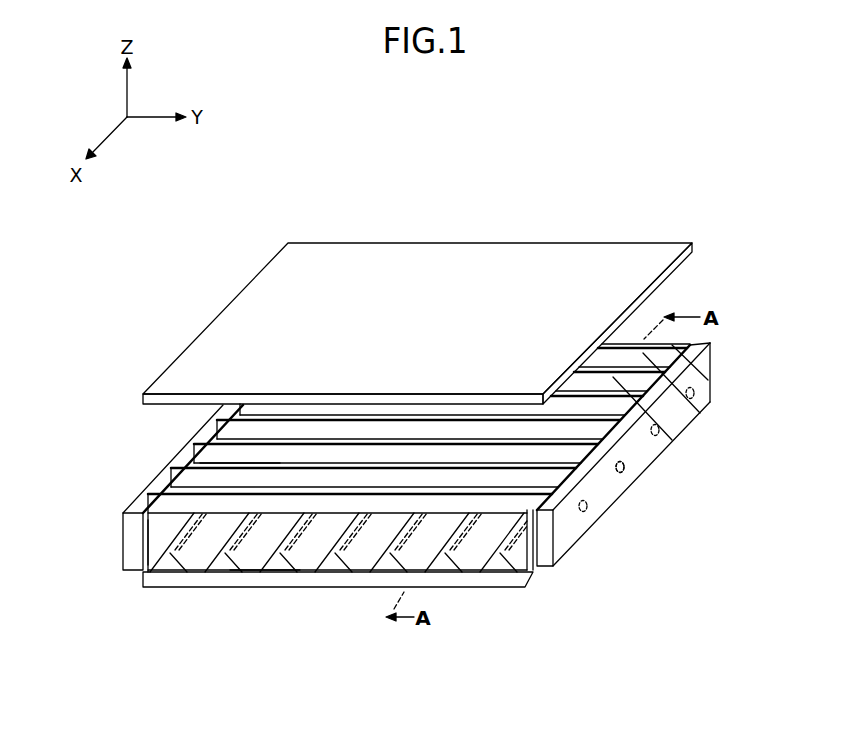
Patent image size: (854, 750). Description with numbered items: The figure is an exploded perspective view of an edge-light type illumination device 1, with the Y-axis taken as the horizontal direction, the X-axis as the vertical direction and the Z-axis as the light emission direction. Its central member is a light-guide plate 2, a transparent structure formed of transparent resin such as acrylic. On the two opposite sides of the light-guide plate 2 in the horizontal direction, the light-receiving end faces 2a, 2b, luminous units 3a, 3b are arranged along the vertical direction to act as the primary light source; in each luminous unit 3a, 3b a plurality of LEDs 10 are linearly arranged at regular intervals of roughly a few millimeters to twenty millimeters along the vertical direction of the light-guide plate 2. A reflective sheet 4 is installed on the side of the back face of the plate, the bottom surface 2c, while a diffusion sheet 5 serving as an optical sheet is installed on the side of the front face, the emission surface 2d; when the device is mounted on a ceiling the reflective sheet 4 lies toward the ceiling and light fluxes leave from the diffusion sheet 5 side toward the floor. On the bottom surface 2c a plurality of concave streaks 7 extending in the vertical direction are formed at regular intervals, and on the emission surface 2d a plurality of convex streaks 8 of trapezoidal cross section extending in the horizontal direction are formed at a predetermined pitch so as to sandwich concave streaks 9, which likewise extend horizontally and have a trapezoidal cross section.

The edge-light type illumination device 1 is at (448, 200).
The light-guide plate 2 is at (197, 548).
The light-receiving end face 2a is at (535, 538).
The light-receiving end face 2b is at (125, 555).
The bottom surface 2c is at (252, 570).
The emission surface 2d is at (228, 455).
The luminous unit 3a is at (567, 540).
The luminous unit 3b is at (123, 532).
The reflective sheet 4 is at (331, 589).
The diffusion sheet 5 is at (694, 248).
The concave streaks 7 is at (225, 553).
The convex streaks 8 is at (667, 347).
The concave streaks 9 is at (695, 389).
The LEDs 10 is at (622, 474).